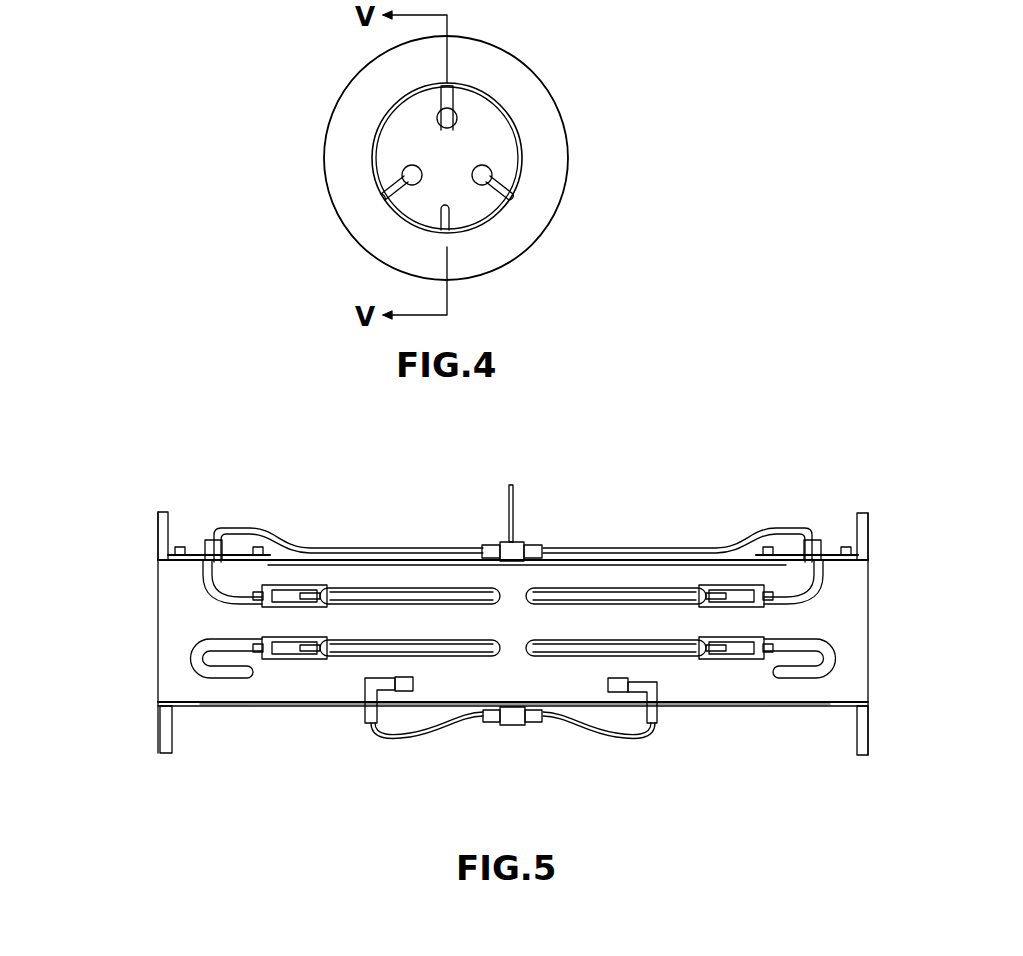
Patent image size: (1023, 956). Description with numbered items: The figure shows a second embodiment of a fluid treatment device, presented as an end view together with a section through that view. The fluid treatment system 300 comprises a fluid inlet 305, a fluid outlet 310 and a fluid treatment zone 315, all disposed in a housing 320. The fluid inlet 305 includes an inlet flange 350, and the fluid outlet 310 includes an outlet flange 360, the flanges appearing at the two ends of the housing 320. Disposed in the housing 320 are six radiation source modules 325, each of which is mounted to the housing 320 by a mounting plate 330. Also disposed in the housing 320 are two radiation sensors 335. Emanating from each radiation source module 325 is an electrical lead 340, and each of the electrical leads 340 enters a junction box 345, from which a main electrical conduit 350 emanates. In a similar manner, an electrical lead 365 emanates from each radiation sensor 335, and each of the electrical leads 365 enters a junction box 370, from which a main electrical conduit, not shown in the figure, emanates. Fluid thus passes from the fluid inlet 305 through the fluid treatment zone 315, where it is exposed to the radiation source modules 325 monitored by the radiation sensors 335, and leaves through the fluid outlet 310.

In FIG. 4, the fluid treatment system 300 is at (476, 205).
In FIG. 5, the fluid treatment system 300 is at (513, 704).
In FIG. 4, the fluid inlet 305 is at (393, 158).
In FIG. 5, the fluid inlet 305 is at (109, 632).
In FIG. 5, the fluid outlet 310 is at (916, 634).
In FIG. 4, the fluid treatment zone 315 is at (508, 154).
In FIG. 5, the fluid treatment zone 315 is at (540, 694).
In FIG. 5, the housing 320 is at (515, 753).
In FIG. 4, the radiation source module 325 is at (393, 126).
In FIG. 5, the radiation source module 325 is at (510, 720).
In FIG. 5, the mounting plate 330 is at (512, 496).
In FIG. 4, the radiation sensor 335 is at (502, 254).
In FIG. 5, the radiation sensor 335 is at (510, 739).
In FIG. 5, the electrical lead 340 is at (513, 520).
In FIG. 5, the junction box 345 is at (549, 499).
In FIG. 4, the main electrical conduit 350 is at (397, 176).
In FIG. 5, the main electrical conduit 350 is at (286, 619).
In FIG. 5, the outlet flange 360 is at (912, 657).
In FIG. 5, the electrical lead 365 is at (513, 757).
In FIG. 5, the junction box 370 is at (512, 754).